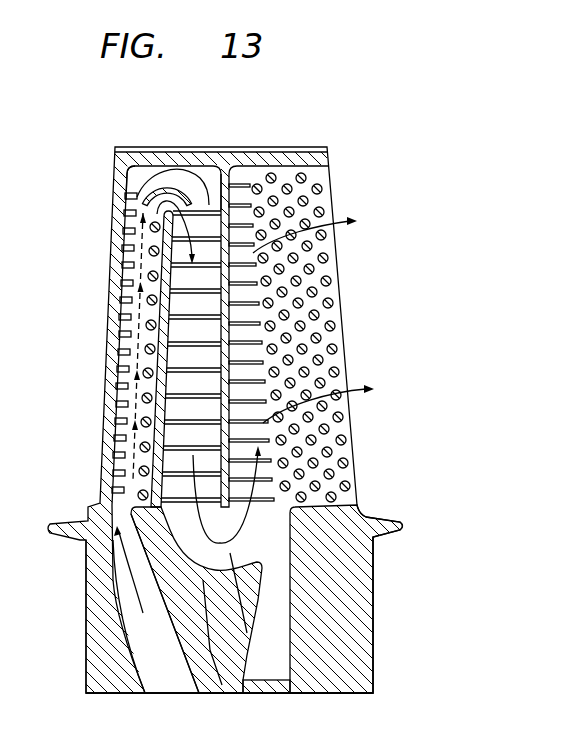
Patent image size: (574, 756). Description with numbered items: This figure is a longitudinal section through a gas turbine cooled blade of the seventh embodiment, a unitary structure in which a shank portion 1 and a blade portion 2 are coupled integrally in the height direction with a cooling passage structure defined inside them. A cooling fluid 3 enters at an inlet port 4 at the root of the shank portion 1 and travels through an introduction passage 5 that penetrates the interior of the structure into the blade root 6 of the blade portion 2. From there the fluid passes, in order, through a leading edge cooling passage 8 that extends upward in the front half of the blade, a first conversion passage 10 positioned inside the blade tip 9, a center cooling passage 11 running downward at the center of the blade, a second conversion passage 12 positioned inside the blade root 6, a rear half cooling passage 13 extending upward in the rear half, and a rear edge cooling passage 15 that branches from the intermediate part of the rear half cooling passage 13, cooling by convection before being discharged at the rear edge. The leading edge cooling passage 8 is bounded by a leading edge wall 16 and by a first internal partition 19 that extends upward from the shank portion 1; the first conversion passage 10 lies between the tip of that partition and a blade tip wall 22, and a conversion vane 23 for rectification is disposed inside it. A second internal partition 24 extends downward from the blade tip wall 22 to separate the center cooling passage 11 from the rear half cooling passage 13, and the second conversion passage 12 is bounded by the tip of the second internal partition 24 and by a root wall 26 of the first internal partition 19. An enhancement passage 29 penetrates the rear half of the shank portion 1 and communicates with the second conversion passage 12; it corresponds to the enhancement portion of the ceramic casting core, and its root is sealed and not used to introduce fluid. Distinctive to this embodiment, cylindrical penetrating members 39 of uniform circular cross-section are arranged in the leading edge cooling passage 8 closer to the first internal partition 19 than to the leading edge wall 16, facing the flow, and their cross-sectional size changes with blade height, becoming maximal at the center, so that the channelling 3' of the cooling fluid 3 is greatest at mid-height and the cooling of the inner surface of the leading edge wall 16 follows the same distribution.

The shank portion 1 is at (420, 512).
The blade portion 2 is at (420, 150).
The cooling fluid 3 is at (204, 361).
The channelling 3' is at (84, 346).
The inlet port 4 is at (157, 694).
The introduction passage 5 is at (168, 660).
The blade root 6 is at (71, 463).
The leading edge cooling passage 8 is at (125, 426).
The blade tip 9 is at (93, 148).
The first conversion passage 10 is at (148, 170).
The center cooling passage 11 is at (190, 273).
The second conversion passage 12 is at (279, 645).
The rear half cooling passage 13 is at (255, 276).
The rear edge cooling passage 15 is at (327, 440).
The leading edge wall 16 is at (118, 340).
The first internal partition 19 is at (122, 408).
The blade tip wall 22 is at (177, 160).
The conversion vane 23 is at (150, 194).
The second internal partition 24 is at (250, 185).
The root wall 26 is at (203, 623).
The enhancement passage 29 is at (292, 650).
The cylindrical penetrating members 39 is at (118, 302).